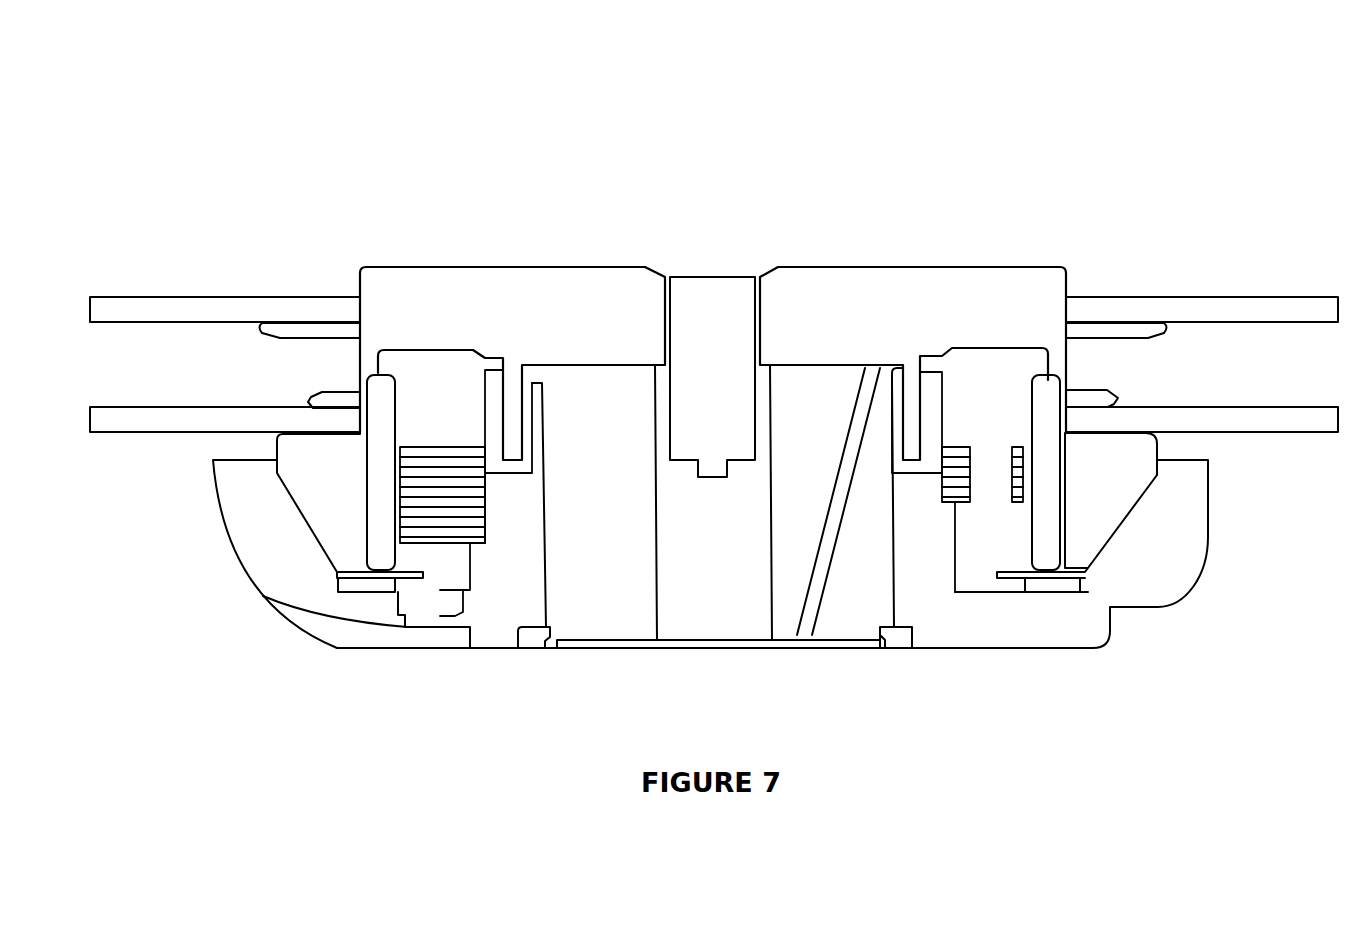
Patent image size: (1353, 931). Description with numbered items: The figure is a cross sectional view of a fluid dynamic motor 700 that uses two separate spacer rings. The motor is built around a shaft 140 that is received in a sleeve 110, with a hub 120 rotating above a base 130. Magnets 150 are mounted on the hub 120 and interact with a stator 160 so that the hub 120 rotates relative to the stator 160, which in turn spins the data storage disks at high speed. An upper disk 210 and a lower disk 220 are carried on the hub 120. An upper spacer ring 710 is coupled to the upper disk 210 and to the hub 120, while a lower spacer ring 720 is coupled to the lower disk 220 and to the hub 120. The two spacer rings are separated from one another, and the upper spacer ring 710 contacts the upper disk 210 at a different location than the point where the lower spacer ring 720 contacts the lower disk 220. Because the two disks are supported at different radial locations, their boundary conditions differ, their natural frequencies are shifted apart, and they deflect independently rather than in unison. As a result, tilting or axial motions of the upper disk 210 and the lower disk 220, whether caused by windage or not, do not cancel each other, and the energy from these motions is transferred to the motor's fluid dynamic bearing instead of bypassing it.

The fluid dynamic motor 700 is at (164, 88).
The sleeve 110 is at (800, 450).
The hub 120 is at (877, 338).
The base 130 is at (952, 642).
The shaft 140 is at (697, 562).
The magnets 150 is at (1030, 373).
The stator 160 is at (445, 472).
The upper disk 210 is at (1307, 315).
The lower disk 220 is at (190, 424).
The upper spacer ring 710 is at (1150, 228).
The lower spacer ring 720 is at (336, 398).